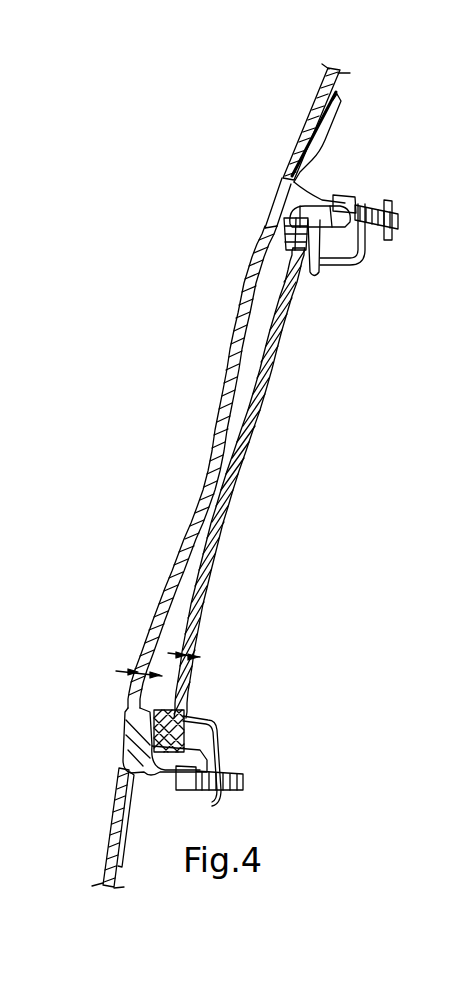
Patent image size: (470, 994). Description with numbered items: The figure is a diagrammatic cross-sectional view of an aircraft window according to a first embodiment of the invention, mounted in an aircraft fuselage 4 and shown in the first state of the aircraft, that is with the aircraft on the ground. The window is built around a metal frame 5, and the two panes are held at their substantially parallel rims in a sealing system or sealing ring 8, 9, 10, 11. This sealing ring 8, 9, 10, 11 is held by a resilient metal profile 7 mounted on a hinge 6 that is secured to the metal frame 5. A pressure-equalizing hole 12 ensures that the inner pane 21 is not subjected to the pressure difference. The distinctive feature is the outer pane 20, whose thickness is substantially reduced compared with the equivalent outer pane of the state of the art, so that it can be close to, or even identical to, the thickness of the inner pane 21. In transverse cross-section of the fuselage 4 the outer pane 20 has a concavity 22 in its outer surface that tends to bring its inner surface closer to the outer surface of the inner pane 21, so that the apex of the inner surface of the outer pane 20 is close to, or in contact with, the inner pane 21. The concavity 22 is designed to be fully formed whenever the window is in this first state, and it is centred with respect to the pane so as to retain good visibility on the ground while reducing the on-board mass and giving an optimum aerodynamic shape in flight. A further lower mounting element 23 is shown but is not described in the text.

The fuselage 4 is at (322, 150).
The metal frame 5 is at (318, 163).
The hinge 6 is at (398, 211).
The resilient metal profile 7 is at (356, 259).
The sealing ring 8 is at (318, 258).
The sealing ring 9 is at (290, 248).
The sealing ring 10 is at (268, 222).
The sealing ring 11 is at (268, 230).
The pressure-equalizing hole 12 is at (300, 290).
The outer pane 20 is at (157, 532).
The inner pane 21 is at (204, 607).
The concavity 22 is at (218, 467).
The lower bracket 23 is at (140, 691).